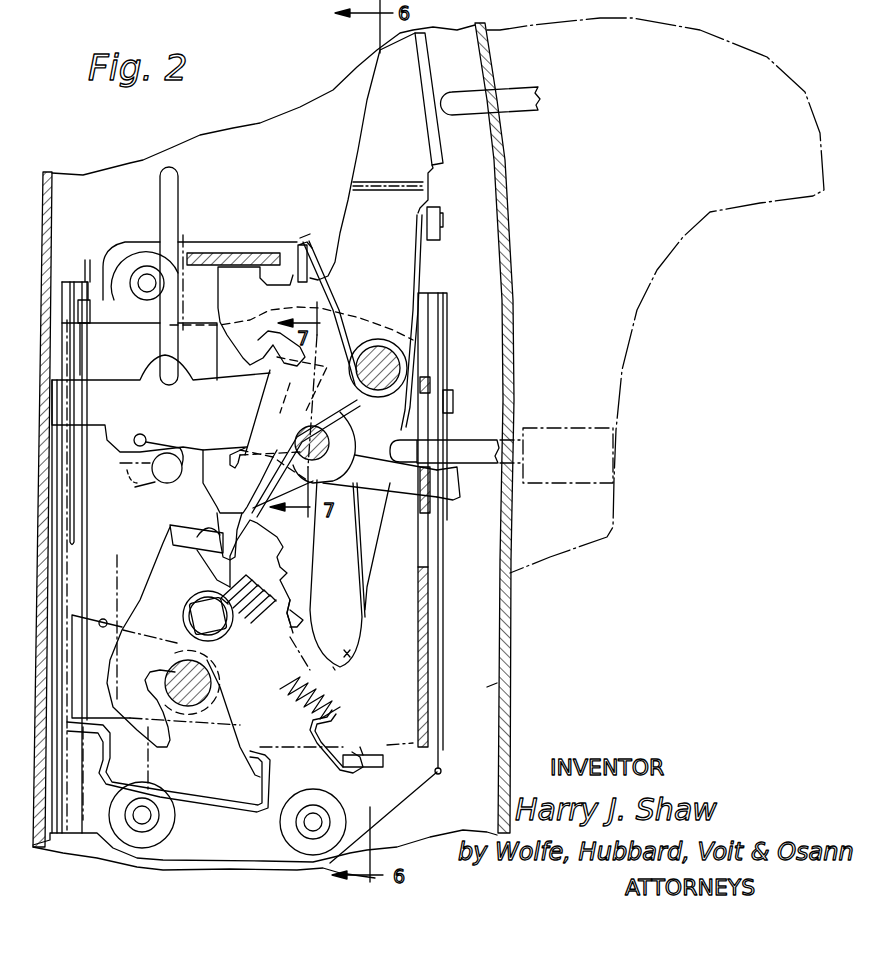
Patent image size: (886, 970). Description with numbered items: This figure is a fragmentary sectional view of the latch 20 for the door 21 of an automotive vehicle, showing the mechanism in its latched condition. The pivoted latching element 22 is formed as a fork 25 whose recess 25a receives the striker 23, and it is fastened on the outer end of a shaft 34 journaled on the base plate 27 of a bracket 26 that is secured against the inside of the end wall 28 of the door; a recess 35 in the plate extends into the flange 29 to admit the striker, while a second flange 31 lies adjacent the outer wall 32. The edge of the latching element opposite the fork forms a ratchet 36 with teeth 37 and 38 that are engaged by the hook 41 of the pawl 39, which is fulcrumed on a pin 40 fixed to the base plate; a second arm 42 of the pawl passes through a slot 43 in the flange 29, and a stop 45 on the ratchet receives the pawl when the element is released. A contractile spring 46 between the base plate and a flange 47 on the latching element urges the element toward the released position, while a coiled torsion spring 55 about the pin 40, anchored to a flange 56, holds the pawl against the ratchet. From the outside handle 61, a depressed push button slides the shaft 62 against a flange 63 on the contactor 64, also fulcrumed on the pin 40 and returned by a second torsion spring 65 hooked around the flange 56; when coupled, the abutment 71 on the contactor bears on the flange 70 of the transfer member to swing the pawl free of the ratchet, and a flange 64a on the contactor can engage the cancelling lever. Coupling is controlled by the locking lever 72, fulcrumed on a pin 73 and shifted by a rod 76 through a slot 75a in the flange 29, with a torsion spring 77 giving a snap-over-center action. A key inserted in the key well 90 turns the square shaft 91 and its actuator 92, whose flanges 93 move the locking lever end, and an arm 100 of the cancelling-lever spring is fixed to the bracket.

The latch 20 is at (432, 602).
The door 21 is at (505, 617).
The latching element 22 is at (173, 581).
The striker 23 is at (167, 673).
The fork 25 is at (137, 707).
The recess 25a is at (168, 767).
The bracket 26 is at (441, 772).
The base plate 27 is at (444, 741).
The end wall 28 is at (497, 683).
The flange 29 is at (77, 290).
The flange 31 is at (430, 687).
The outer wall 32 is at (515, 392).
The shaft 34 is at (193, 613).
The recess 35 is at (104, 619).
The ratchet 36 is at (303, 623).
The tooth 37 is at (300, 617).
The tooth 38 is at (262, 576).
The pawl 39 is at (348, 654).
The pin 40 is at (383, 348).
The hook 41 is at (333, 668).
The second arm 42 is at (110, 330).
The slot 43 is at (86, 347).
The stop 45 is at (258, 533).
The contractile spring 46 is at (335, 697).
The flange 47 is at (170, 545).
The coiled torsion spring 55 is at (363, 578).
The flange 56 is at (300, 240).
The outside handle 61 is at (652, 266).
The shaft 62 is at (520, 92).
The flange 63 is at (423, 75).
The contactor 64 is at (353, 200).
The flange 64a is at (243, 365).
The second torsion spring 65 is at (425, 260).
The flange 70 is at (283, 418).
The abutment 71 is at (377, 359).
The locking lever 72 is at (207, 420).
The pin 73 is at (295, 440).
The slot 75a is at (75, 530).
The rod 76 is at (160, 187).
The torsion spring 77 is at (155, 477).
The key well 90 is at (597, 427).
The square shaft 91 is at (503, 438).
The actuator 92 is at (432, 380).
The flanges 93 is at (453, 392).
The arm 100 is at (348, 424).